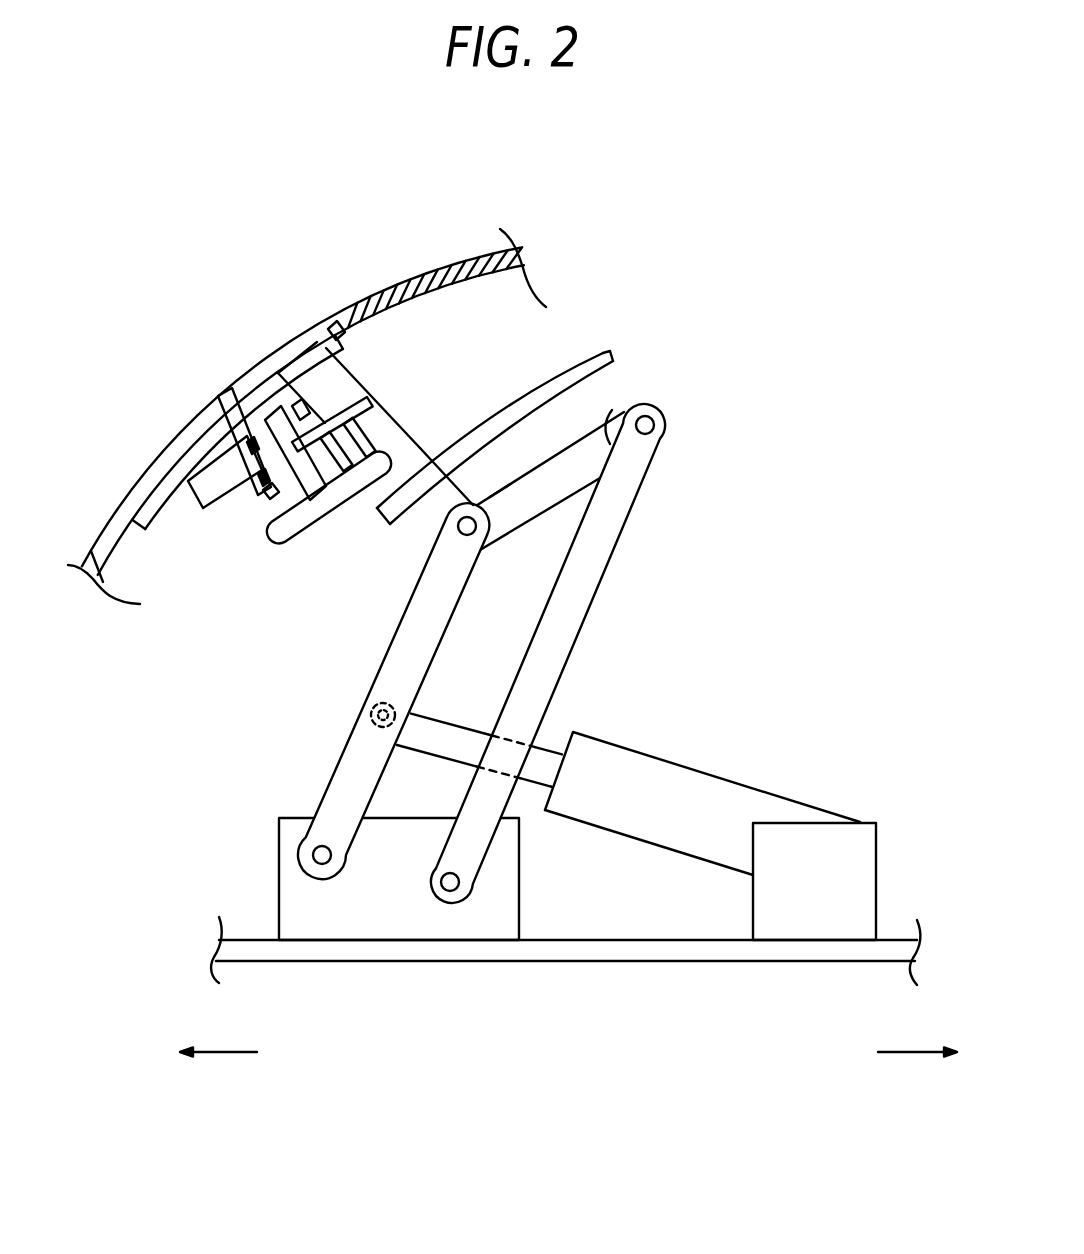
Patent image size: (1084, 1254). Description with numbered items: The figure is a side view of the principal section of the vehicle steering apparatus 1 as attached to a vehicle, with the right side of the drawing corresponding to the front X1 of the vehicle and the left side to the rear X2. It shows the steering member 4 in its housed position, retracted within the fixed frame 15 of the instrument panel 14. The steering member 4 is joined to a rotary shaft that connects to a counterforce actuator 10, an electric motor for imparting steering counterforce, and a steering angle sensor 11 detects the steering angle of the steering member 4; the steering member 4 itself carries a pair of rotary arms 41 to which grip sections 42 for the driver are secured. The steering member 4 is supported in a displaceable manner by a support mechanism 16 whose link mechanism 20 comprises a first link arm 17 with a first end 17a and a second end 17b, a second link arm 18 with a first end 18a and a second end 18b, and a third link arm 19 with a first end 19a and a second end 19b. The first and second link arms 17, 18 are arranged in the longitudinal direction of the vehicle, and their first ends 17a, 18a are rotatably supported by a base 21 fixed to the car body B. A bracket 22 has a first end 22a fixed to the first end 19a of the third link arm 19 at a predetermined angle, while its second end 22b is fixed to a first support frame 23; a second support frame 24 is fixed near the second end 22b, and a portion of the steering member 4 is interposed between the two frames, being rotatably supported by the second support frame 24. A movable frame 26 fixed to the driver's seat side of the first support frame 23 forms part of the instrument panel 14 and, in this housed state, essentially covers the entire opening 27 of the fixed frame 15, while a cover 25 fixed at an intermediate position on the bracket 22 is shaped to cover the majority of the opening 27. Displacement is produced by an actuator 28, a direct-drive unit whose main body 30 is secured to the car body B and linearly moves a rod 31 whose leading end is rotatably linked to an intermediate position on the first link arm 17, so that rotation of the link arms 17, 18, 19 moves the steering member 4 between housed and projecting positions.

The vehicle steering apparatus 1 is at (184, 288).
The steering member 4 is at (198, 515).
The counterforce actuator 10 is at (318, 455).
The steering angle sensor 11 is at (260, 497).
The instrument panel 14 is at (314, 369).
The fixed frame 15 is at (433, 274).
The support mechanism 16 is at (616, 590).
The first link arm 17 is at (341, 691).
The first end of first link arm 17a is at (298, 862).
The second end of first link arm 17b is at (451, 542).
The second link arm 18 is at (591, 665).
The first end of second link arm 18a is at (472, 884).
The second end of second link arm 18b is at (658, 444).
The third link arm 19 is at (576, 468).
The first end of third link arm 19a is at (500, 510).
The second end of third link arm 19b is at (608, 436).
The link mechanism 20 is at (366, 667).
The base 21 is at (405, 826).
The bracket 22 is at (370, 474).
The first end of bracket 22a is at (440, 513).
The second end of bracket 22b is at (318, 382).
The first support frame 23 is at (293, 357).
The second support frame 24 is at (368, 398).
The cover 25 is at (606, 352).
The movable frame 26 is at (160, 465).
The opening 27 is at (333, 322).
The actuator 28 is at (710, 810).
The main body 30 is at (700, 840).
The rod 31 is at (546, 752).
The rotary arm 41 is at (220, 392).
The grip section 42 is at (283, 530).
The car body B is at (538, 962).
The front of the vehicle X1 is at (900, 1054).
The rear of the vehicle X2 is at (222, 1054).